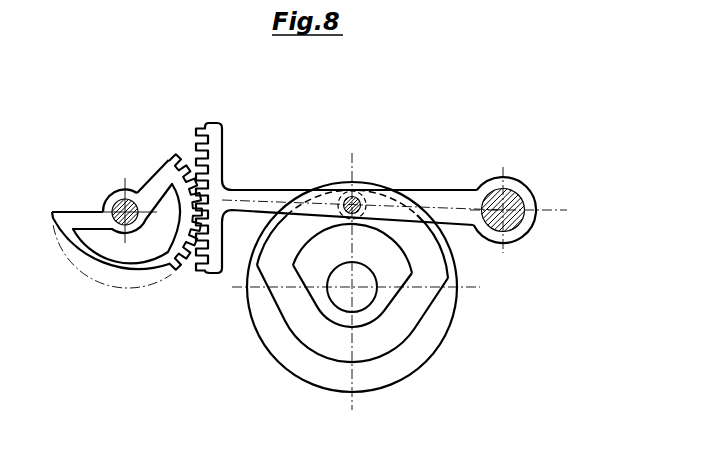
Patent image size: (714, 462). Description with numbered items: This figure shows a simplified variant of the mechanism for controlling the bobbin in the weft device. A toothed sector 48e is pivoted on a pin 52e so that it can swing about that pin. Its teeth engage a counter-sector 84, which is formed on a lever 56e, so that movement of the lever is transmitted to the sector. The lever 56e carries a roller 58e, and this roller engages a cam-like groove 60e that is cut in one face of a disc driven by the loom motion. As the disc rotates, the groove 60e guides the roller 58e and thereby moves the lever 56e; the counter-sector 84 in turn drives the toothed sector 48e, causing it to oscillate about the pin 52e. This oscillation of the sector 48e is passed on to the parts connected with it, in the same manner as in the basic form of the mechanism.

The pin 52e is at (124, 200).
The toothed sector 48e is at (169, 263).
The counter-sector 84 is at (213, 148).
The lever 56e is at (430, 202).
The roller 58e is at (352, 194).
The cam-like groove 60e is at (407, 323).